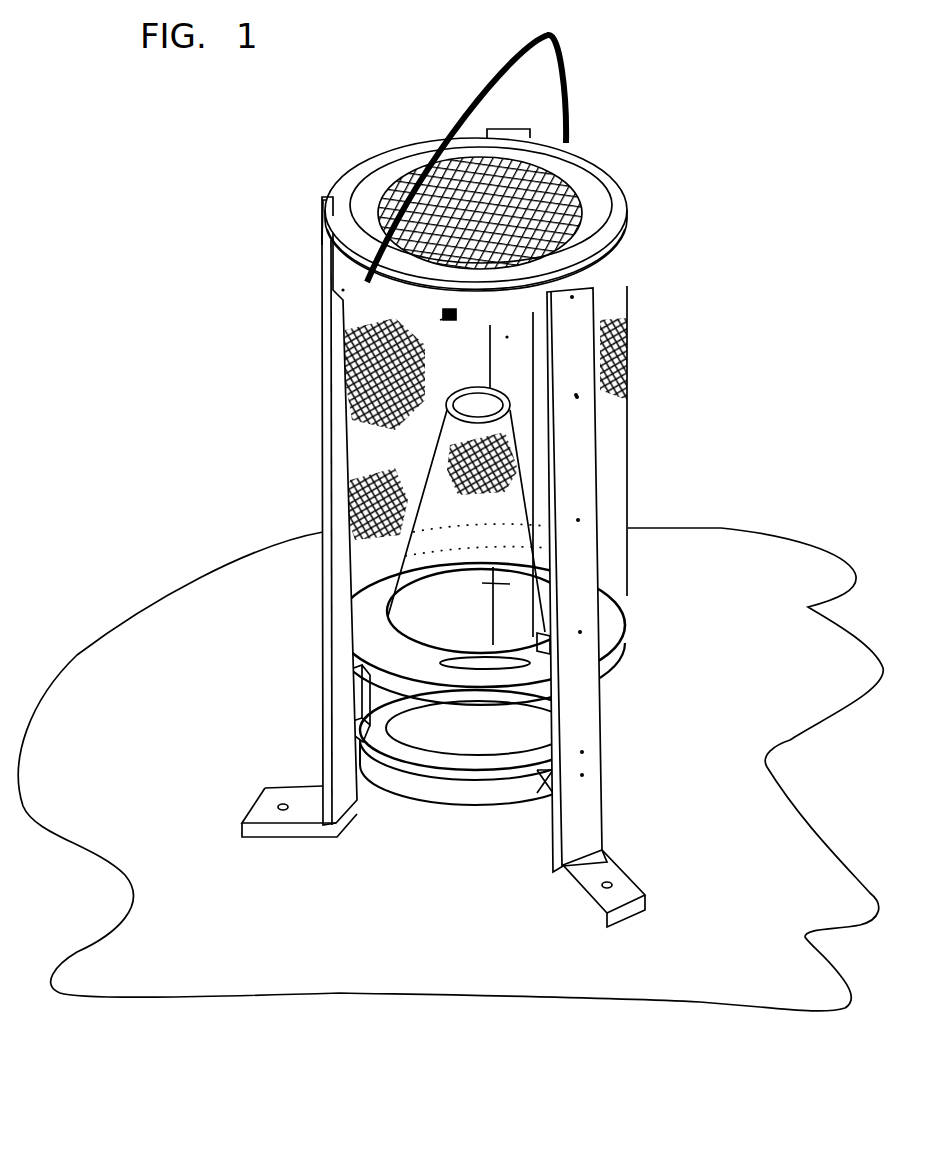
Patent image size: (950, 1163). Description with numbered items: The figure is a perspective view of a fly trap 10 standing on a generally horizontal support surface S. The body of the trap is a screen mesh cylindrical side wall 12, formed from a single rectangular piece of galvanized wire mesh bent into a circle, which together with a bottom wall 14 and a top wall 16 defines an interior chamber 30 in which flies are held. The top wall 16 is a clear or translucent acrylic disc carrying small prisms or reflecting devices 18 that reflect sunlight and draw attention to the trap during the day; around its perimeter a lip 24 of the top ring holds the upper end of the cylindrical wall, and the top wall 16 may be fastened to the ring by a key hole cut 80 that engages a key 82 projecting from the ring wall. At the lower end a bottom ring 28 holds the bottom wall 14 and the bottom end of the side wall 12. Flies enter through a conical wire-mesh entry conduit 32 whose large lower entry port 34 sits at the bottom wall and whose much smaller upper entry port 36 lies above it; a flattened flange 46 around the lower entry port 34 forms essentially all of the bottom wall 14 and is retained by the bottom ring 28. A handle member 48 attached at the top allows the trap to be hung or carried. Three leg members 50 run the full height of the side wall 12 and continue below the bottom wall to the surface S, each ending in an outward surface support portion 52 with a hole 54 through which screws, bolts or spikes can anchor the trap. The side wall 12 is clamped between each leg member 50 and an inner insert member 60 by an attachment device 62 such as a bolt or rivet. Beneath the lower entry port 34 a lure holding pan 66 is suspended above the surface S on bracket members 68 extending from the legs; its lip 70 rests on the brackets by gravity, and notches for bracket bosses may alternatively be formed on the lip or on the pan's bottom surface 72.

The fly trap device 10 is at (645, 148).
The screen mesh cylindrical side wall 12 is at (627, 438).
The bottom wall 14 is at (355, 617).
The top wall 16 is at (487, 190).
The light reflecting devices 18 is at (580, 197).
The lip 24 is at (362, 176).
The bottom ring 28 is at (618, 643).
The interior chamber 30 is at (357, 447).
The entry conduit 32 is at (383, 509).
The lower entry port 34 is at (437, 627).
The upper entry port 36 is at (478, 405).
The flange 46 is at (375, 638).
The handle member 48 is at (568, 44).
The leg members 50 is at (323, 307).
The surface support portion 52 is at (263, 833).
The hole 54 is at (282, 806).
The inner insert member 60 is at (344, 291).
The attachment device 62 is at (577, 397).
The lure holding pan 66 is at (500, 747).
The bracket members 68 is at (368, 745).
The lip 70 is at (443, 767).
The bottom surface 72 is at (473, 807).
The key hole cut 80 is at (444, 319).
The key 82 is at (458, 314).
The support surface S is at (112, 665).